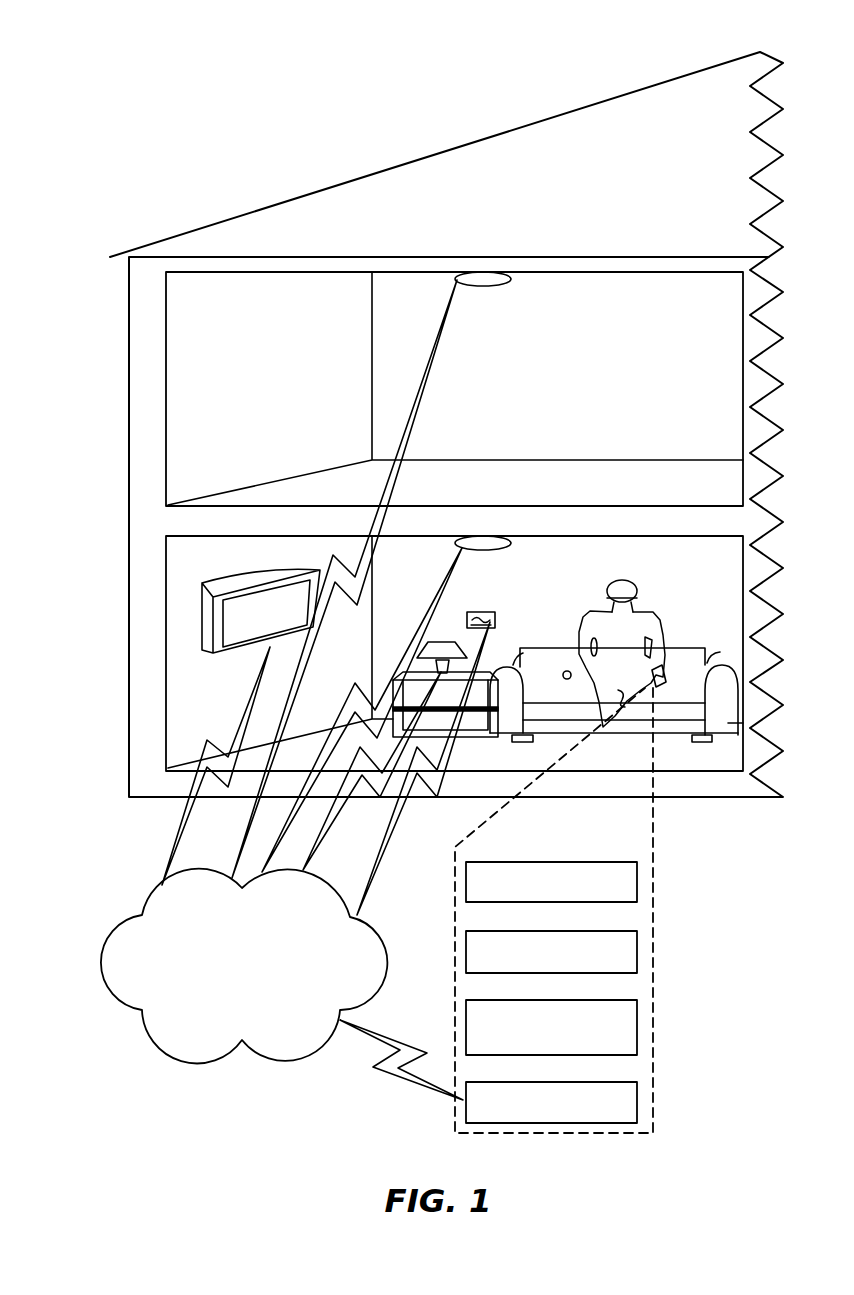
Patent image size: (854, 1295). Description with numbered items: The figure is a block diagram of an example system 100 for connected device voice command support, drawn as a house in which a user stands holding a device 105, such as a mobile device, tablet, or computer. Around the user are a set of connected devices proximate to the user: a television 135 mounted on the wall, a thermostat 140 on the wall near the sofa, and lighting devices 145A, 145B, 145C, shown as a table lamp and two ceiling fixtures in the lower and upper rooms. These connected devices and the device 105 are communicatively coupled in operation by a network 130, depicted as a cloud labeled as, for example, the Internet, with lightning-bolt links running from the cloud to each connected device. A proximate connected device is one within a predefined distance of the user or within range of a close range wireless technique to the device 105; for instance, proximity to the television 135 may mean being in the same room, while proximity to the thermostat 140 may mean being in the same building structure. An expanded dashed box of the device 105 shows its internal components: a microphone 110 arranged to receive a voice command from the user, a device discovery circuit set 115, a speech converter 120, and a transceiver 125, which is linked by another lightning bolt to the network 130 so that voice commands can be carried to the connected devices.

The system 100 is at (707, 41).
The device 105 is at (652, 842).
The microphone 110 is at (638, 872).
The device discovery circuit set 115 is at (638, 947).
The speech converter 120 is at (638, 1021).
The transceiver 125 is at (638, 1097).
The network 130 is at (168, 1047).
The television 135 is at (280, 565).
The thermostat 140 is at (496, 620).
The lighting device 145A is at (442, 640).
The lighting device 145B is at (513, 550).
The lighting device 145C is at (508, 283).